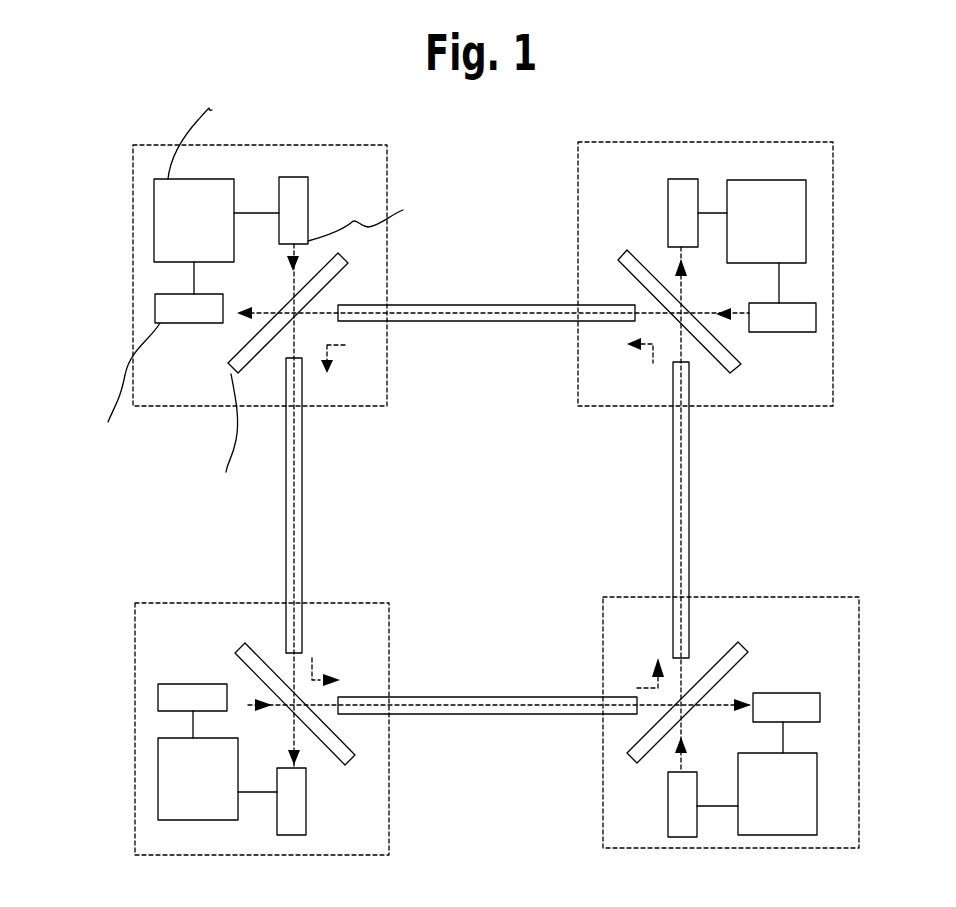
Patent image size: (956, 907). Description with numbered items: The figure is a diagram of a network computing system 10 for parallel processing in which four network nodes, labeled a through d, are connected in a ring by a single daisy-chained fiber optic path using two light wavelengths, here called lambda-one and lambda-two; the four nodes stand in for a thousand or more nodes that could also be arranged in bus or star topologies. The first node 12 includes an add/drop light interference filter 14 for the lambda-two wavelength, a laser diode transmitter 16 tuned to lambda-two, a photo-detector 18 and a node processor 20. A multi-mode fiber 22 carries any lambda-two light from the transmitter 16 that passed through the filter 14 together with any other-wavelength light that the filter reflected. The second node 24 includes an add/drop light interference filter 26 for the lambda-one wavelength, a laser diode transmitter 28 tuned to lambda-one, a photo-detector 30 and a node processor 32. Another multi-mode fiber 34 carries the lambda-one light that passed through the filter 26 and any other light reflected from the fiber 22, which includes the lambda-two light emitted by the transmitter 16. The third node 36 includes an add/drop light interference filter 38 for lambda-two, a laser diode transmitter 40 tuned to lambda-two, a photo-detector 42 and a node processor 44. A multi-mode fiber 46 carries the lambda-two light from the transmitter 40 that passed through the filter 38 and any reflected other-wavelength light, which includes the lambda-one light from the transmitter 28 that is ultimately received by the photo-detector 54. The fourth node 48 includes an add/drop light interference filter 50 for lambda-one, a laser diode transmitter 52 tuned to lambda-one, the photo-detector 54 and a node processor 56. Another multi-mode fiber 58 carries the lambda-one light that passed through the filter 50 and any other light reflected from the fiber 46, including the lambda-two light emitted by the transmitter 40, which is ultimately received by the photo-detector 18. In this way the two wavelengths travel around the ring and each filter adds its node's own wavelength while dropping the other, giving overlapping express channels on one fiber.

The network computing system 10 is at (74, 108).
The first node 12 is at (387, 167).
The add/drop light interference filter 14 is at (344, 272).
The laser diode transmitter 16 is at (308, 183).
The photo-detector 18 is at (170, 323).
The node processor 20 is at (180, 179).
The multi-mode fiber 22 is at (302, 516).
The second node 24 is at (389, 641).
The add/drop light interference filter 26 is at (352, 764).
The laser diode transmitter 28 is at (183, 684).
The photo-detector 30 is at (306, 819).
The node processor 32 is at (218, 820).
The multi-mode fiber 34 is at (467, 697).
The third node 36 is at (860, 608).
The add/drop light interference filter 38 is at (625, 751).
The laser diode transmitter 40 is at (668, 793).
The photo-detector 42 is at (795, 693).
The node processor 44 is at (817, 773).
The multi-mode fiber 46 is at (672, 516).
The fourth node 48 is at (834, 317).
The add/drop light interference filter 50 is at (738, 372).
The laser diode transmitter 52 is at (805, 332).
The photo-detector 54 is at (688, 179).
The node processor 56 is at (788, 180).
The multi-mode fiber 58 is at (441, 305).